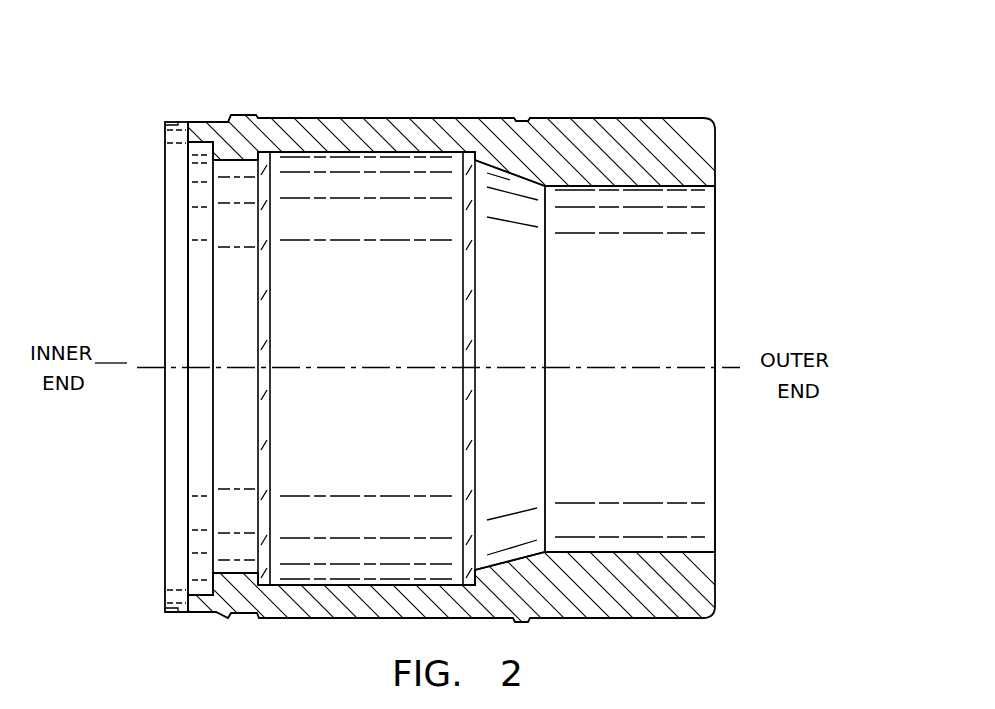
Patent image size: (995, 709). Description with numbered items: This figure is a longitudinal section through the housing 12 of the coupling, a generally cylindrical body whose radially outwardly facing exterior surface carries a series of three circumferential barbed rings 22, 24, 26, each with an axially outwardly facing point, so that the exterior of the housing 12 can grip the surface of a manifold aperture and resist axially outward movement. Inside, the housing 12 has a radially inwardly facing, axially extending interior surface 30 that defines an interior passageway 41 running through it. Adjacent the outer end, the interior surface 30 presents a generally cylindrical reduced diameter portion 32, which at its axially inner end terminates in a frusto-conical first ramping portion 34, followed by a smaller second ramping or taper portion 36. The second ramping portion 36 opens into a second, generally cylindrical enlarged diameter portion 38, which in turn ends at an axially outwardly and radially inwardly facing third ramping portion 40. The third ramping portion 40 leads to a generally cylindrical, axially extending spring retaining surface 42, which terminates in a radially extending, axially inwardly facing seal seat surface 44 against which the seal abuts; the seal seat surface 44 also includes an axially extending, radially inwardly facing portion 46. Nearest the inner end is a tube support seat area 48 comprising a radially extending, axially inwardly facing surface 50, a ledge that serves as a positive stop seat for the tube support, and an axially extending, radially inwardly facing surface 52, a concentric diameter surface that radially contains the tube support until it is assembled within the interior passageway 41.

The housing 12 is at (756, 91).
The circumferential barbed ring 22 is at (530, 118).
The circumferential barbed ring 24 is at (260, 115).
The circumferential barbed ring 26 is at (230, 115).
The interior surface 30 is at (629, 339).
The reduced diameter portion 32 is at (677, 188).
The first ramping portion 34 is at (537, 183).
The second ramping portion 36 is at (465, 153).
The enlarged diameter portion 38 is at (397, 152).
The third ramping portion 40 is at (260, 157).
The interior passageway 41 is at (676, 324).
The spring retaining surface 42 is at (233, 162).
The seal seat surface 44 is at (212, 158).
The radially inwardly facing portion 46 is at (190, 142).
The tube support seat area 48 is at (168, 574).
The axially inwardly facing surface 50 is at (188, 596).
The radially inwardly facing surface 52 is at (172, 605).